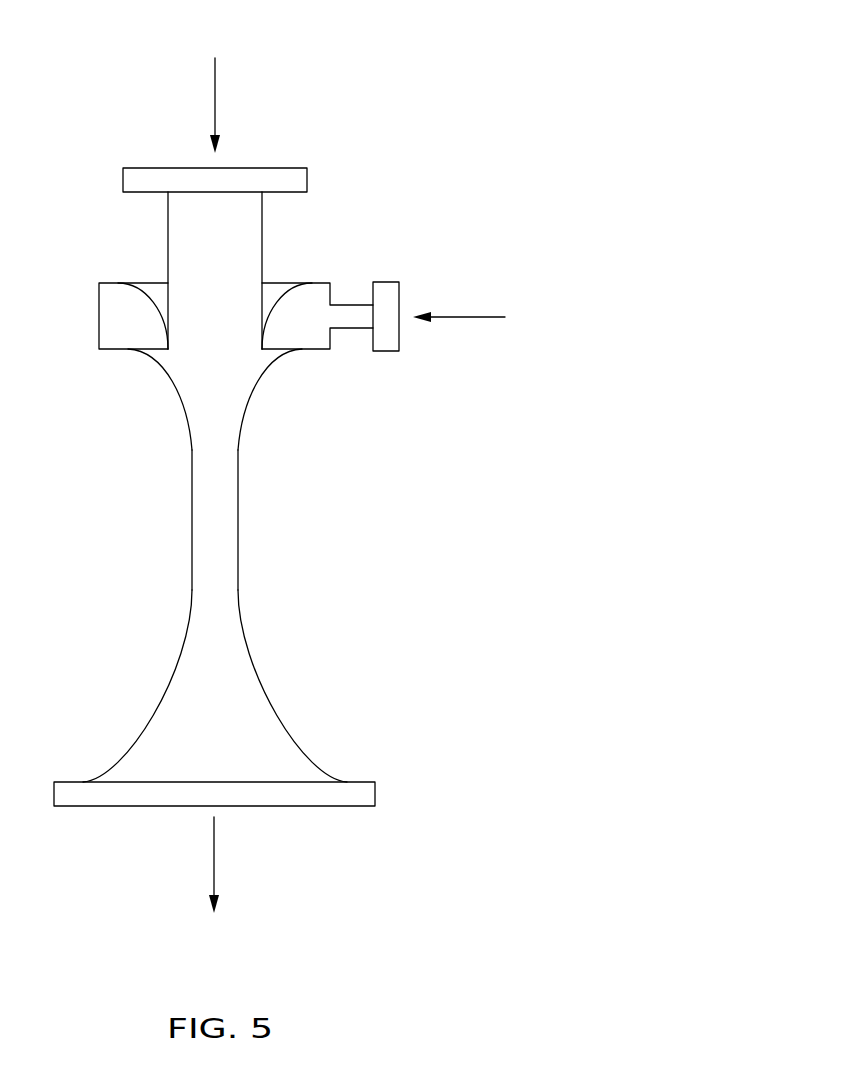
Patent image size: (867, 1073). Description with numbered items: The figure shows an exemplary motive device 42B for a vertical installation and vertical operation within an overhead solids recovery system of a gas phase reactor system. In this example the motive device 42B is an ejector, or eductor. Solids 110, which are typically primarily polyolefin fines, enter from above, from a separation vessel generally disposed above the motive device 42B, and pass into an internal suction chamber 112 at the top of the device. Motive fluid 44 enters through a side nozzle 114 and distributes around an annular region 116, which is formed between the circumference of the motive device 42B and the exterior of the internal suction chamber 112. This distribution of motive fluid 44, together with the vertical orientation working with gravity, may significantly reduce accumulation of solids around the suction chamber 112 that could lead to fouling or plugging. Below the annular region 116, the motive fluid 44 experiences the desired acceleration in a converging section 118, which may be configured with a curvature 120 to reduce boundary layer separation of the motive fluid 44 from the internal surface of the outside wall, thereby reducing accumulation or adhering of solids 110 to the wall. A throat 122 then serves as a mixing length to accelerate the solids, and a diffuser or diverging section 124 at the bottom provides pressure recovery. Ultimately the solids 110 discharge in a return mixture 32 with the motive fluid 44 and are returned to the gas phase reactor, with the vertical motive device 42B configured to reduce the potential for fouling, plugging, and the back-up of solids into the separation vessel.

The motive device 42B is at (422, 56).
The solids 110 is at (215, 98).
The suction chamber 112 is at (232, 255).
The side nozzle 114 is at (386, 282).
The annular region 116 is at (115, 320).
The converging section 118 is at (263, 375).
The curvature 120 is at (165, 376).
The throat 122 is at (240, 517).
The diffuser or diverging section 124 is at (295, 754).
The return mixture 32 is at (214, 858).
The motive fluid 44 is at (465, 317).